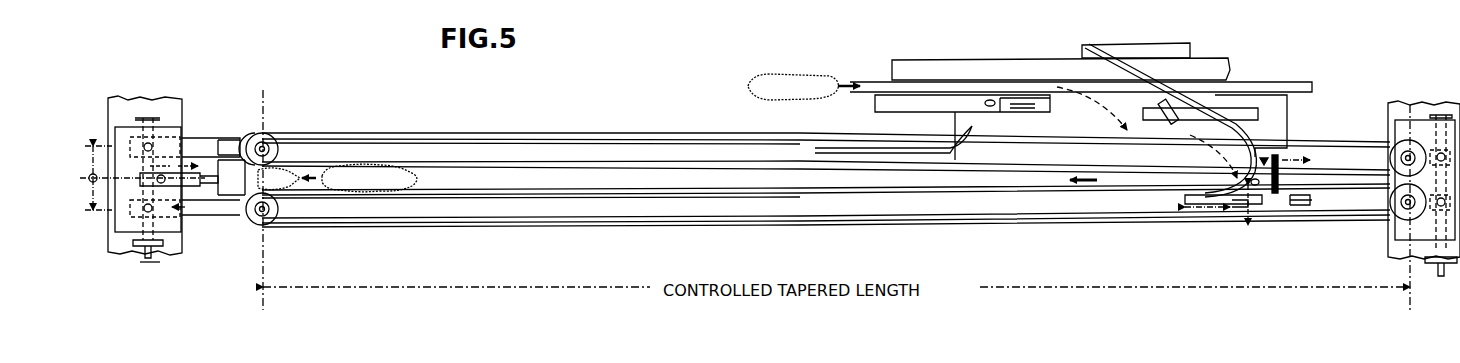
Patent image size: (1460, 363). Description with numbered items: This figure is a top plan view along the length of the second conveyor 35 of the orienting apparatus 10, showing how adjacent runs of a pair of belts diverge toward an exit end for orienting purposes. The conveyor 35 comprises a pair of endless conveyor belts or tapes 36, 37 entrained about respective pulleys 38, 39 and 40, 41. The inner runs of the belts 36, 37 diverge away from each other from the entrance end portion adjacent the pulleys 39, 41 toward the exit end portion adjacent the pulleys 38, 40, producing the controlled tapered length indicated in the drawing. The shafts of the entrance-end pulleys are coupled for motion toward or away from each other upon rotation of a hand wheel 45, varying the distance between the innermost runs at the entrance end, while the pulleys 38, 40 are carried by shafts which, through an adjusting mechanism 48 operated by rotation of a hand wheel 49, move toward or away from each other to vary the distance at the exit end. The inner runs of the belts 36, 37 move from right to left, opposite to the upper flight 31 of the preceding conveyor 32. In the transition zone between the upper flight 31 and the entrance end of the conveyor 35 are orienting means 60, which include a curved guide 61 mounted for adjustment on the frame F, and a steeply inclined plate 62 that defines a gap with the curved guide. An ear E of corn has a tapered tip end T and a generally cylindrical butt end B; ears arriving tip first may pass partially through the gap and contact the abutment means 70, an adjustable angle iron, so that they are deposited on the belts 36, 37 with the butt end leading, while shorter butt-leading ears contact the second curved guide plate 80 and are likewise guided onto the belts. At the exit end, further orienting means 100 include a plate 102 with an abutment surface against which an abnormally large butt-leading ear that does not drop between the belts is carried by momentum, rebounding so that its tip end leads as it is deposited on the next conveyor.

The orienting apparatus 10 is at (1270, 48).
The upper flight 31 is at (868, 83).
The conveyor 32 is at (983, 78).
The conveyor 35 is at (962, 227).
The conveyor belt 36 is at (545, 162).
The conveyor belt 37 is at (547, 195).
The pulley 38 is at (273, 137).
The pulley 39 is at (1410, 147).
The pulley 40 is at (273, 219).
The pulley 41 is at (1397, 210).
The hand wheel 45 is at (1440, 274).
The adjusting mechanism 48 is at (122, 136).
The hand wheel 49 is at (162, 263).
The orienting means 60 is at (1183, 130).
The curved guide 61 is at (1242, 141).
The inclined plate 62 is at (1064, 143).
The abutment means 70 is at (1270, 200).
The curved guide plate 80 is at (1238, 202).
The orienting means 100 is at (195, 132).
The plate 102 is at (222, 187).
The frame F is at (167, 100).
The tip end T is at (243, 148).
The butt end B is at (318, 160).
The ear E is at (360, 180).